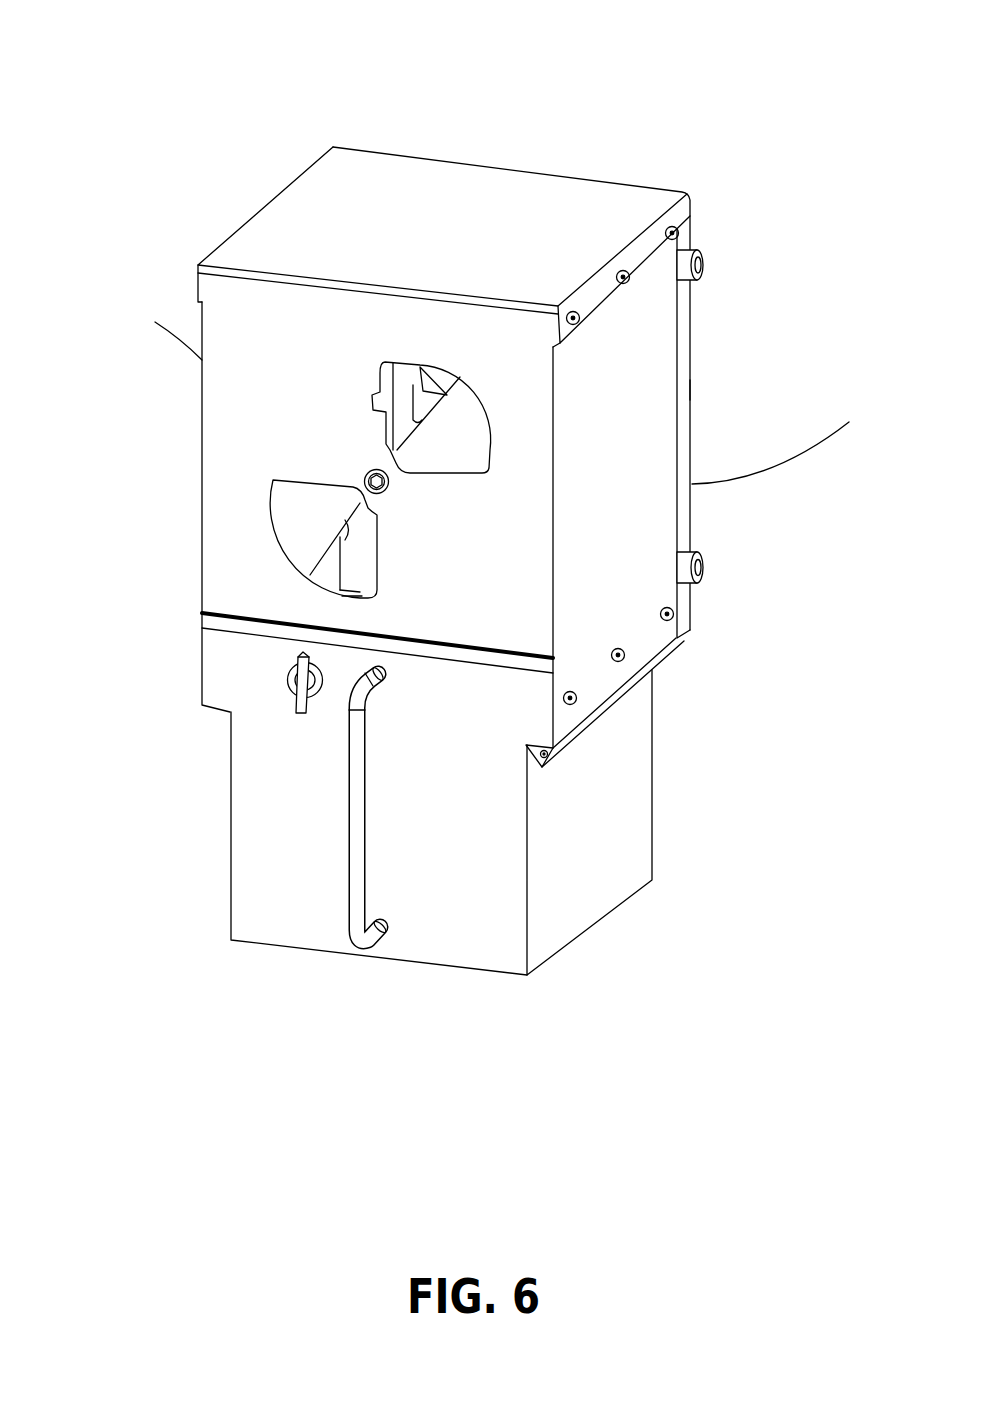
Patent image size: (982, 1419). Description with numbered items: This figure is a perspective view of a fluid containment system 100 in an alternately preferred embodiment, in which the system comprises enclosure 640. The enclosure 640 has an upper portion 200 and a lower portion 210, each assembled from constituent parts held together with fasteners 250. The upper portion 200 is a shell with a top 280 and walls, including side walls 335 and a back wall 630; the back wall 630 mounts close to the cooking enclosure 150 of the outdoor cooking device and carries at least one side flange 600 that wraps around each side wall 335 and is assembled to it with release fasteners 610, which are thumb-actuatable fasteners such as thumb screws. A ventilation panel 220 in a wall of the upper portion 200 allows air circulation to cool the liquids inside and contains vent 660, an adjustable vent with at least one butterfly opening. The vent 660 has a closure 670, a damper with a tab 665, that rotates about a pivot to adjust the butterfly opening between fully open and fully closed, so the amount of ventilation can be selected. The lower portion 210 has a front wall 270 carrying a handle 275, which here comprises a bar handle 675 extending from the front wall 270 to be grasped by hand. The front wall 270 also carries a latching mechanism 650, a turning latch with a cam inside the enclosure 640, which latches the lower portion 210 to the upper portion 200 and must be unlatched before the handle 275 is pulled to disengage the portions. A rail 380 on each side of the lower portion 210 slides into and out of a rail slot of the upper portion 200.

The fluid containment system 100 is at (222, 50).
The enclosure 640 is at (218, 120).
The upper portion 200 is at (142, 277).
The top 280 is at (298, 177).
The fasteners 250 is at (680, 227).
The side flange 600 is at (692, 330).
The back wall 630 is at (692, 391).
The release fasteners 610 is at (705, 268).
The cooking enclosure 150 is at (771, 468).
The ventilation panel 220 is at (322, 408).
The side wall 335 is at (665, 650).
The rail 380 is at (575, 735).
The tab 665 is at (423, 417).
The vent 660 is at (272, 518).
The closure 670 is at (327, 553).
The latching mechanism 650 is at (292, 705).
The bar handle 675 is at (367, 737).
The handle 275 is at (377, 935).
The front wall 270 is at (231, 868).
The lower portion 210 is at (655, 922).